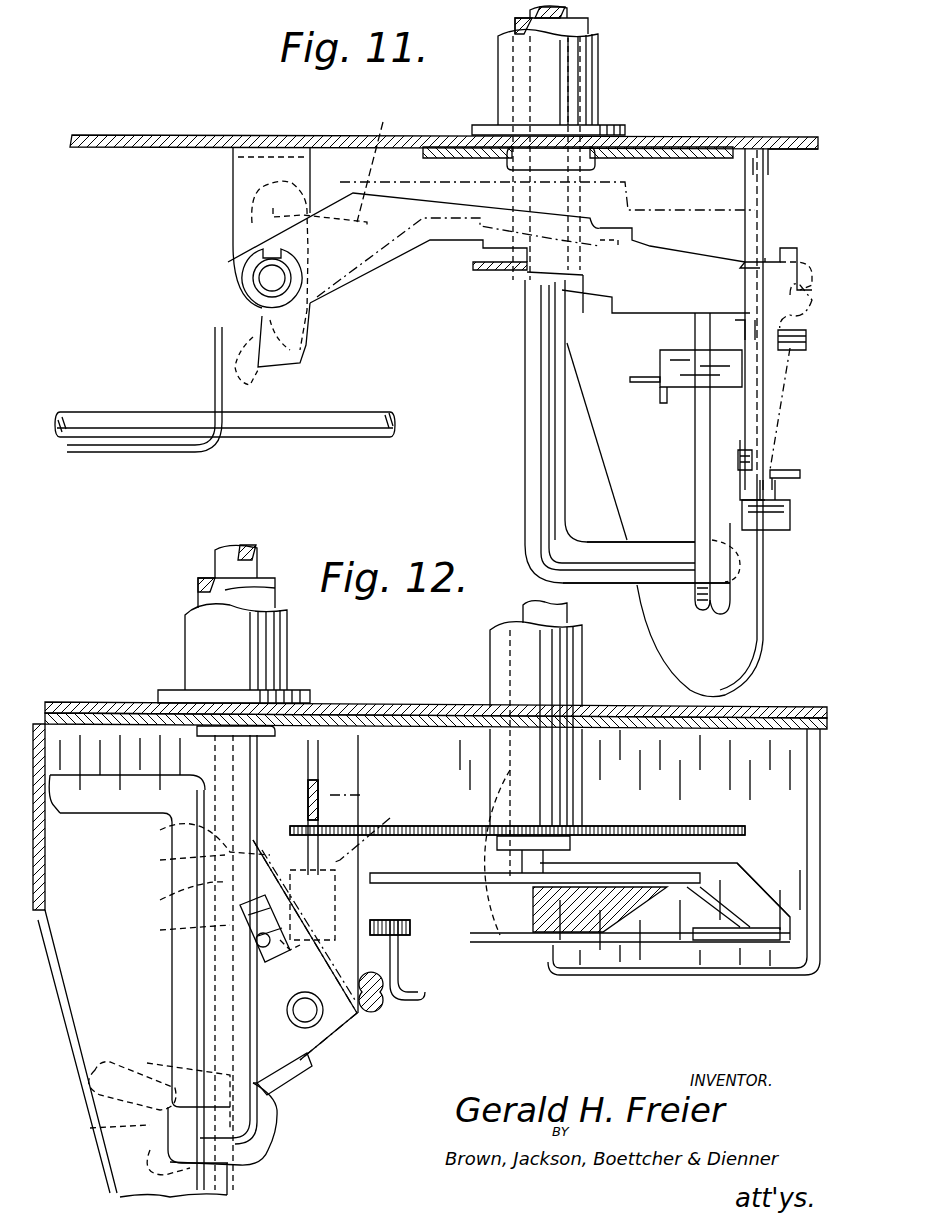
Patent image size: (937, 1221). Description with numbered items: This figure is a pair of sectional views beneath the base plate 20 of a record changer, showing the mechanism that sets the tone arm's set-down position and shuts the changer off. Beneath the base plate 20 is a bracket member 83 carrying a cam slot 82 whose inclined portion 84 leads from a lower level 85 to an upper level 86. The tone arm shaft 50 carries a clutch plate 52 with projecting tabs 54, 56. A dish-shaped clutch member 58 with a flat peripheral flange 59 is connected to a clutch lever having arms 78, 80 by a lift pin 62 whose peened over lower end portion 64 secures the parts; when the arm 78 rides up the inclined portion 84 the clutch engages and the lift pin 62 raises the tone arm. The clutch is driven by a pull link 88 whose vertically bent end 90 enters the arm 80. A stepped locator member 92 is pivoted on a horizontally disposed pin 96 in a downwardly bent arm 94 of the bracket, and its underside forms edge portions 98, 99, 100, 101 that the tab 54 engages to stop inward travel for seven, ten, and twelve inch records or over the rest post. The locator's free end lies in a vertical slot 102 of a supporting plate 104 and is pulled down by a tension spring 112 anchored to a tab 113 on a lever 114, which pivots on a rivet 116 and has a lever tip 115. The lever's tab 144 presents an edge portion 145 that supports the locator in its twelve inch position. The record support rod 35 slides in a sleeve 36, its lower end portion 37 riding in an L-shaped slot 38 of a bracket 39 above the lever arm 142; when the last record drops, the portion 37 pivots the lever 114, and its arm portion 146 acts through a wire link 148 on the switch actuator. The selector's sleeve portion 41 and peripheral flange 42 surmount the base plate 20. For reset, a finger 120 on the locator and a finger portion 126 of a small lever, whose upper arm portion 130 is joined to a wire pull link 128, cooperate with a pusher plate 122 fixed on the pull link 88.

In FIG. 11, the base plate 20 is at (255, 135).
In FIG. 12, the base plate 20 is at (352, 704).
In FIG. 11, the rod 35 is at (530, 11).
In FIG. 12, the rod 35 is at (218, 553).
In FIG. 11, the sleeve 36 is at (588, 22).
In FIG. 12, the sleeve 36 is at (198, 587).
In FIG. 11, the lower end portion of the rod 37 is at (613, 578).
In FIG. 12, the lower end portion of the rod 37 is at (90, 1130).
In FIG. 11, the L-shaped slot 38 is at (720, 583).
In FIG. 12, the L-shaped slot 38 is at (172, 870).
In FIG. 11, the bracket 39 is at (606, 480).
In FIG. 12, the bracket 39 is at (112, 912).
In FIG. 11, the sleeve portion 41 is at (600, 85).
In FIG. 12, the sleeve portion 41 is at (185, 628).
In FIG. 11, the peripheral flange 42 is at (626, 128).
In FIG. 12, the peripheral flange 42 is at (296, 690).
In FIG. 12, the tone arm shaft 50 is at (563, 780).
In FIG. 12, the clutch plate 52 is at (660, 828).
In FIG. 11, the projecting tab 54 is at (478, 271).
In FIG. 12, the projecting tab 54 is at (362, 824).
In FIG. 12, the projecting tab 56 is at (742, 830).
In FIG. 12, the clutch member 58 is at (597, 930).
In FIG. 12, the flat peripheral flange 59 is at (375, 875).
In FIG. 12, the lift pin 62 is at (522, 606).
In FIG. 12, the peened over lower end portion 64 is at (547, 950).
In FIG. 12, the arm 78 is at (727, 940).
In FIG. 12, the arm 80 is at (431, 945).
In FIG. 12, the cam slot 82 is at (762, 870).
In FIG. 12, the bracket member 83 is at (775, 760).
In FIG. 12, the inclined portion 84 is at (712, 925).
In FIG. 12, the lower level 85 is at (787, 967).
In FIG. 12, the upper level 86 is at (630, 856).
In FIG. 11, the pull link 88 is at (268, 432).
In FIG. 12, the pull link 88 is at (395, 1000).
In FIG. 12, the vertically bent end 90 is at (418, 988).
In FIG. 11, the stepped locator member 92 is at (708, 210).
In FIG. 12, the stepped locator member 92 is at (316, 790).
In FIG. 11, the downwardly bent arm 94 is at (233, 180).
In FIG. 11, the horizontally disposed pin 96 is at (263, 276).
In FIG. 11, the edge portion 98 is at (594, 300).
In FIG. 11, the edge portion 99 is at (555, 284).
In FIG. 11, the edge portion 100 is at (530, 274).
In FIG. 11, the edge portion 101 is at (472, 257).
In FIG. 12, the vertical slot 102 is at (320, 752).
In FIG. 11, the supporting plate 104 is at (752, 385).
In FIG. 12, the supporting plate 104 is at (352, 792).
In FIG. 11, the tension spring 112 is at (795, 470).
In FIG. 11, the tab 113 is at (760, 525).
In FIG. 12, the tab 113 is at (297, 1077).
In FIG. 11, the lever 114 is at (745, 412).
In FIG. 12, the lever 114 is at (160, 860).
In FIG. 11, the lever tip 115 is at (745, 262).
In FIG. 12, the lever tip 115 is at (195, 830).
In FIG. 11, the rivet 116 is at (735, 460).
In FIG. 12, the rivet 116 is at (310, 1022).
In FIG. 11, the finger 120 is at (285, 350).
In FIG. 11, the pusher plate 122 is at (213, 388).
In FIG. 11, the finger portion 126 is at (255, 365).
In FIG. 11, the wire pull link 128 is at (382, 161).
In FIG. 11, the upper arm portion 130 is at (250, 220).
In FIG. 11, the lever arm 142 is at (700, 610).
In FIG. 12, the lever arm 142 is at (110, 1062).
In FIG. 12, the tab 144 is at (340, 900).
In FIG. 11, the edge portion 145 is at (745, 322).
In FIG. 12, the edge portion 145 is at (165, 898).
In FIG. 11, the arm portion 146 is at (662, 392).
In FIG. 12, the arm portion 146 is at (410, 945).
In FIG. 11, the wire link 148 is at (645, 378).
In FIG. 12, the wire link 148 is at (170, 928).